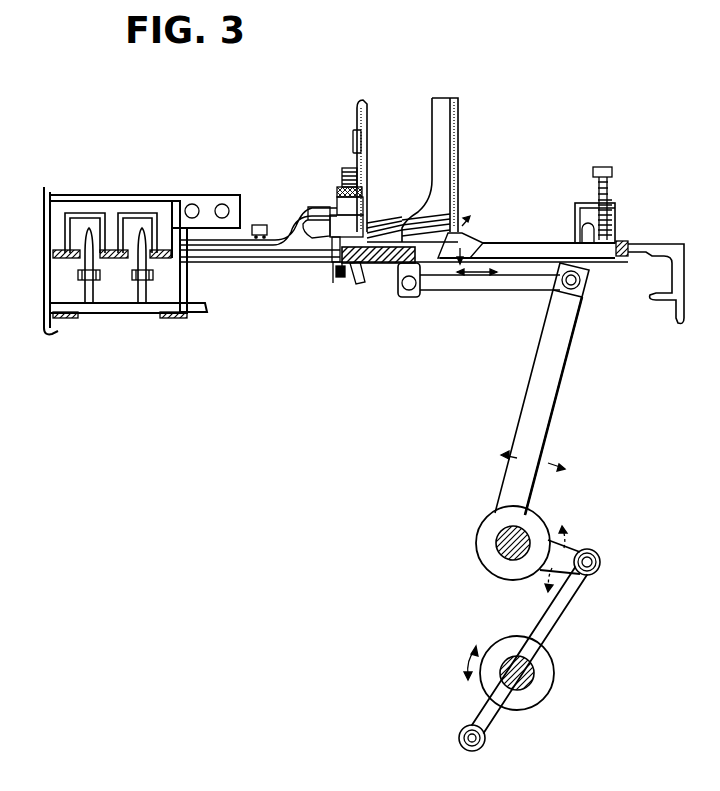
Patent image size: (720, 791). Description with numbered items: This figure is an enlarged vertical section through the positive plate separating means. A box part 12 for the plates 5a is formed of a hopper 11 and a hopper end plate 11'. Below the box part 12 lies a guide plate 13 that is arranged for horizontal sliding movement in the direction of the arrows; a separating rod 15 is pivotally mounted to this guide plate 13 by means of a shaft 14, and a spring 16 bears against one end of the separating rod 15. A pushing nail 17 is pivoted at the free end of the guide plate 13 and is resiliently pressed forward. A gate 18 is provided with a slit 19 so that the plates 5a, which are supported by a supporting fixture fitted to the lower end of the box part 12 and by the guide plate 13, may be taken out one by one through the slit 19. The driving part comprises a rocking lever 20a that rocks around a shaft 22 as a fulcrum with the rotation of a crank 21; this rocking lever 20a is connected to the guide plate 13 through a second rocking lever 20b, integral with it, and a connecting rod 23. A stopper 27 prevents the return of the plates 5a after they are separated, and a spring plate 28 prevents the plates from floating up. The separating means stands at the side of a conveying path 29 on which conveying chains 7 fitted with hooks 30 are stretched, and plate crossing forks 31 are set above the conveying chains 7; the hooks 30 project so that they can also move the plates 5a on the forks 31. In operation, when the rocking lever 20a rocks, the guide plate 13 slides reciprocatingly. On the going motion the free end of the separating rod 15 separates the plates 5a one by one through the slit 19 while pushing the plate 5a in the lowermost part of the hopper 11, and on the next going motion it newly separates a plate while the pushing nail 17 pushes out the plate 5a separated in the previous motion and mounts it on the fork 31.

The plates 5a is at (402, 217).
The conveying chains 7 is at (78, 282).
The hopper 11 is at (451, 167).
The hopper end plate 11' is at (342, 165).
The box part 12 is at (409, 150).
The guide plate 13 is at (379, 262).
The shaft 14 is at (587, 227).
The separating rod 15 is at (500, 246).
The spring 16 is at (610, 217).
The pushing nail 17 is at (337, 261).
The gate 18 is at (347, 208).
The slit 19 is at (312, 223).
The rocking lever 20a is at (575, 548).
The rocking lever 20b is at (548, 407).
The crank 21 is at (492, 730).
The shaft 22 is at (507, 548).
The connecting rod 23 is at (457, 283).
The stopper 27 is at (308, 257).
The spring plate 28 is at (292, 223).
The conveying path 29 is at (117, 280).
The hooks 30 is at (87, 213).
The plate crossing forks 31 is at (55, 268).